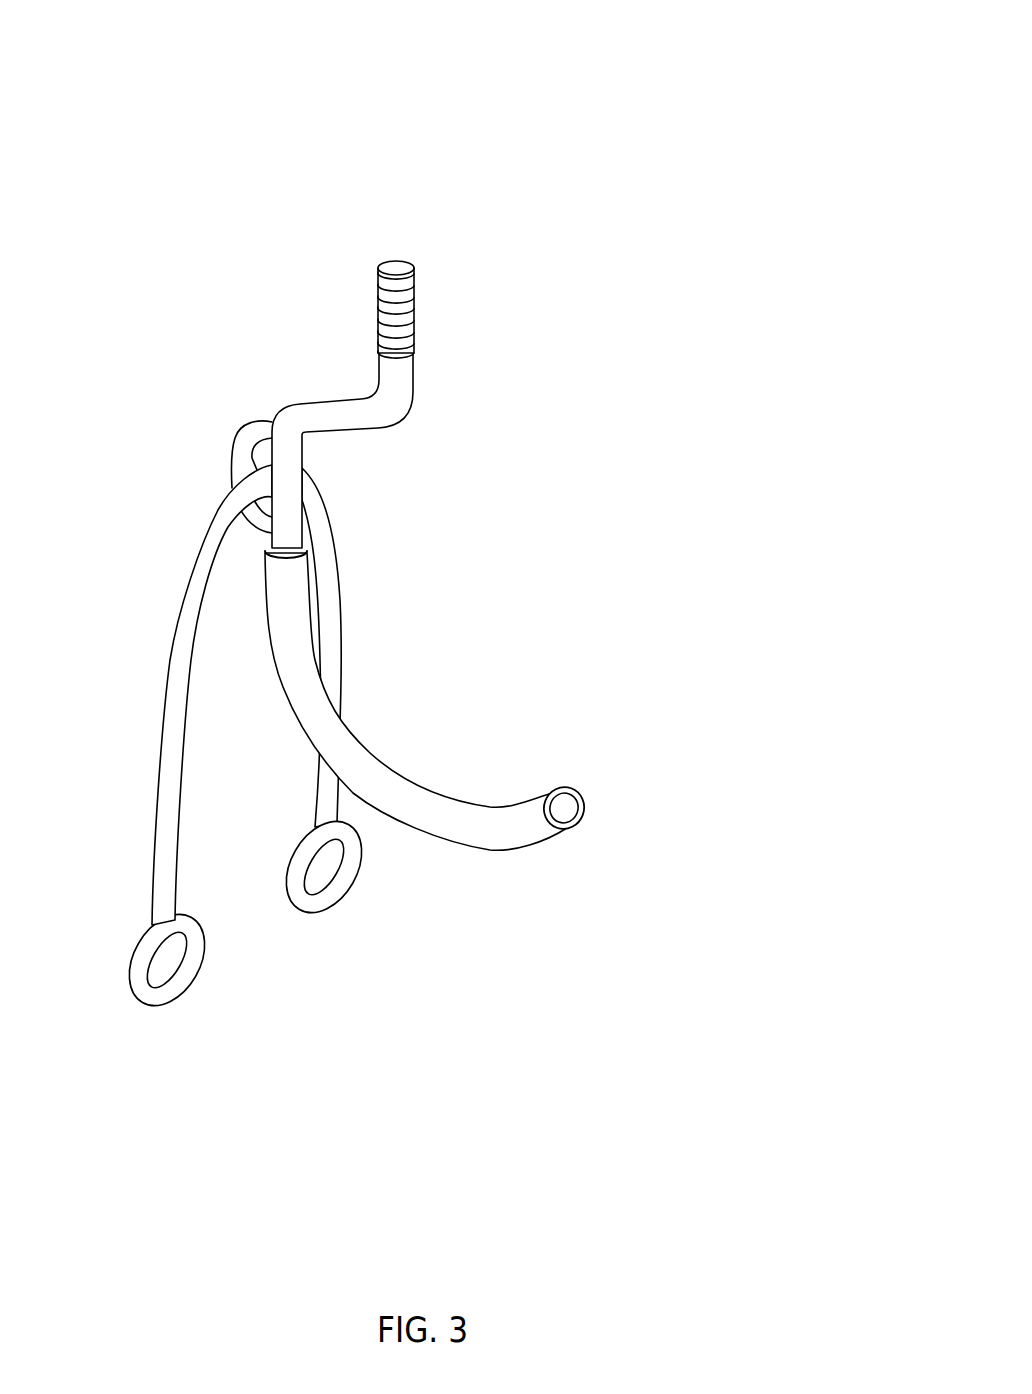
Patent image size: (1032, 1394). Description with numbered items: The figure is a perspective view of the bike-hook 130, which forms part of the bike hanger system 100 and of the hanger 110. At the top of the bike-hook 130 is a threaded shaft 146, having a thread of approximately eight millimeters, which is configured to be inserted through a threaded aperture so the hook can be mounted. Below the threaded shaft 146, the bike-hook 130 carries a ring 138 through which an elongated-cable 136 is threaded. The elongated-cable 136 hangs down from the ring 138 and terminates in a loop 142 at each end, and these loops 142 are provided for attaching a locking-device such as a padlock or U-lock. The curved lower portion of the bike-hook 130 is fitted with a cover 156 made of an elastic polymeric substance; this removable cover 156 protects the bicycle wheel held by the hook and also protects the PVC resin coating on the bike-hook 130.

The bike hanger system 100 is at (770, 47).
The hanger assembly 110 is at (772, 90).
The bike-hook 130 is at (433, 410).
The threaded shaft 146 is at (417, 300).
The ring 138 is at (238, 468).
The elongated-cable 136 is at (183, 617).
The cover 156 is at (358, 738).
The loop 142 is at (152, 995).